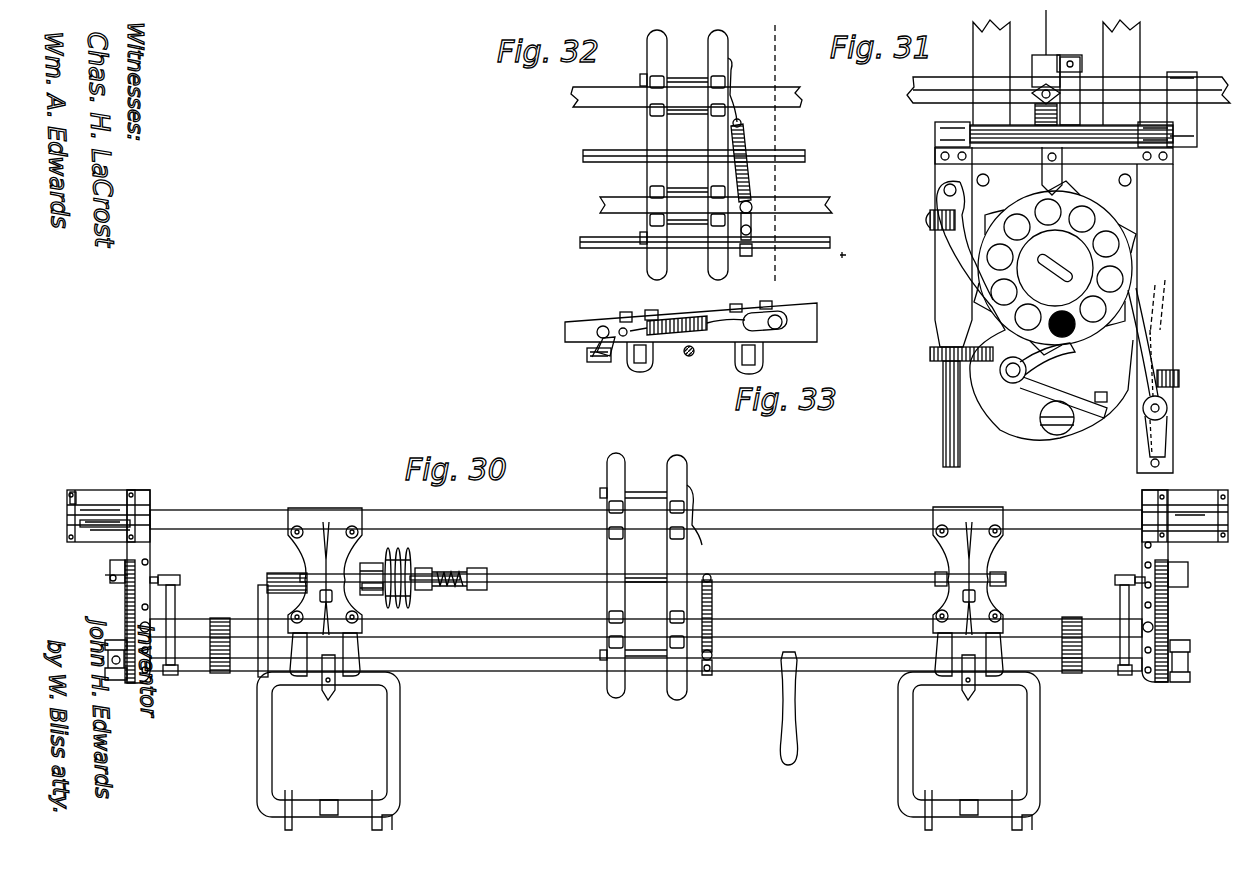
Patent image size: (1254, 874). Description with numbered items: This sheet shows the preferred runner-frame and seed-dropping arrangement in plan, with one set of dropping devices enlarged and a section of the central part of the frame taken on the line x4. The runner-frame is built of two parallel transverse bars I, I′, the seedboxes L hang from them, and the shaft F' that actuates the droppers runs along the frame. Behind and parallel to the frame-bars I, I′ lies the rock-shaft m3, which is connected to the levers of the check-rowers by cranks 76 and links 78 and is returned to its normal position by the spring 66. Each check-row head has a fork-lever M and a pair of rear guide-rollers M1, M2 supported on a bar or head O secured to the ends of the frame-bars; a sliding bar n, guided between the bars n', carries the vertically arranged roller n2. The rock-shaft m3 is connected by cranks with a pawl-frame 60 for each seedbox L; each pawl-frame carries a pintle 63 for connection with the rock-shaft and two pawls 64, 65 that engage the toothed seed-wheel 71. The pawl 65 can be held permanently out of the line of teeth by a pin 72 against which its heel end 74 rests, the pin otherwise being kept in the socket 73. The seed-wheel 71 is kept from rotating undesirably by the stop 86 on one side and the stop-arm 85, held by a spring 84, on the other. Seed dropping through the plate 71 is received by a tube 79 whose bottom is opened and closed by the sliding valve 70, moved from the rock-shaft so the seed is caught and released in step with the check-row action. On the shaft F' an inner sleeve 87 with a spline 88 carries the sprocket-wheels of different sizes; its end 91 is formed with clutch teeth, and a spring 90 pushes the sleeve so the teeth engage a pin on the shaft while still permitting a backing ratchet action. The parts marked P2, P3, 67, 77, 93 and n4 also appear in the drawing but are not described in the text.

In FIG. 32, the transverse frame-bar I is at (790, 95).
In FIG. 33, the transverse frame-bar I is at (648, 362).
In FIG. 30, the transverse frame-bar I is at (893, 508).
In FIG. 32, the transverse frame-bar I′ is at (820, 205).
In FIG. 33, the transverse frame-bar I′ is at (755, 368).
In FIG. 31, the transverse frame-bar I′ is at (830, 205).
In FIG. 30, the transverse frame-bar I′ is at (880, 617).
In FIG. 32, the dropper-actuating shaft F' is at (680, 172).
In FIG. 33, the dropper-actuating shaft F' is at (682, 376).
In FIG. 30, the dropper-actuating shaft F' is at (631, 606).
In FIG. 32, the rock-shaft m3 is at (590, 248).
In FIG. 33, the rock-shaft m3 is at (579, 360).
In FIG. 31, the rock-shaft m3 is at (918, 103).
In FIG. 30, the rock-shaft m3 is at (460, 671).
In FIG. 32, the clamping plate P2 is at (664, 38).
In FIG. 33, the clamping plate P2 is at (702, 321).
In FIG. 30, the clamping plate P2 is at (605, 470).
In FIG. 32, the clamping plate P3 is at (738, 75).
In FIG. 33, the clamping plate P3 is at (770, 330).
In FIG. 30, the clamping plate P3 is at (700, 515).
In FIG. 32, the spring 66 is at (747, 140).
In FIG. 33, the spring 66 is at (680, 318).
In FIG. 30, the spring 66 is at (712, 610).
In FIG. 32, the hook 67 is at (750, 255).
In FIG. 33, the hook 67 is at (612, 332).
In FIG. 30, the hook 67 is at (712, 672).
In FIG. 32, the section line x4 is at (777, 149).
In FIG. 31, the pawl-frame 60 is at (940, 300).
In FIG. 31, the pivot or pintle 63 is at (1175, 137).
In FIG. 31, the pawl 64 is at (1040, 55).
In FIG. 31, the pawl 65 is at (1145, 332).
In FIG. 31, the sliding valve 70 is at (1078, 110).
In FIG. 31, the toothed seed-wheel 71 is at (1132, 270).
In FIG. 31, the pin 72 is at (1150, 455).
In FIG. 31, the socket or aperture 73 is at (1157, 466).
In FIG. 31, the heel end of pawl 74 is at (1163, 440).
In FIG. 31, the spring 84 is at (1040, 392).
In FIG. 31, the stop-arm 85 is at (1060, 350).
In FIG. 31, the stop 86 is at (1042, 175).
In FIG. 30, the crank 76 is at (178, 572).
In FIG. 30, the lower clamp 77 is at (170, 675).
In FIG. 30, the link or pitman 78 is at (175, 615).
In FIG. 30, the seed tube 79 is at (646, 645).
In FIG. 30, the inner sleeve 87 is at (375, 566).
In FIG. 30, the spline 88 is at (372, 595).
In FIG. 30, the spring 90 is at (460, 590).
In FIG. 30, the clutch end of sleeve 91 is at (338, 560).
In FIG. 30, the hand lever 93 is at (795, 735).
In FIG. 30, the seedbox L is at (648, 742).
In FIG. 30, the fork-lever M is at (110, 572).
In FIG. 30, the rear guide-roller M1 is at (105, 672).
In FIG. 30, the rear guide-roller M2 is at (105, 650).
In FIG. 30, the bar or head O is at (125, 600).
In FIG. 30, the sliding bar n is at (108, 500).
In FIG. 30, the guide-bar n' is at (105, 545).
In FIG. 30, the vertically-arranged roller n2 is at (131, 490).
In FIG. 30, the pin n4 is at (72, 490).